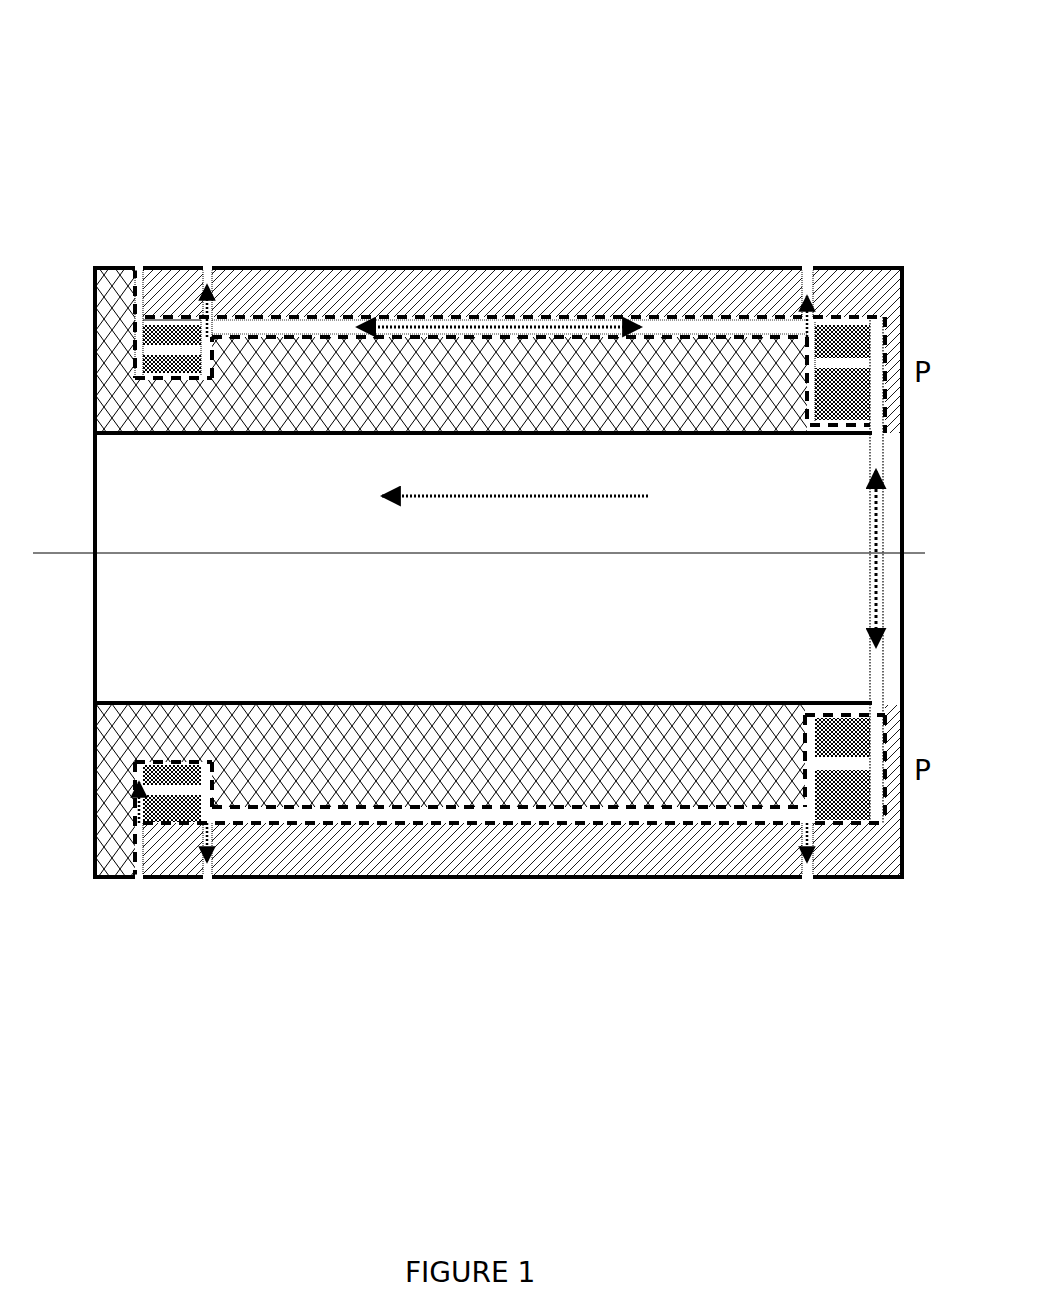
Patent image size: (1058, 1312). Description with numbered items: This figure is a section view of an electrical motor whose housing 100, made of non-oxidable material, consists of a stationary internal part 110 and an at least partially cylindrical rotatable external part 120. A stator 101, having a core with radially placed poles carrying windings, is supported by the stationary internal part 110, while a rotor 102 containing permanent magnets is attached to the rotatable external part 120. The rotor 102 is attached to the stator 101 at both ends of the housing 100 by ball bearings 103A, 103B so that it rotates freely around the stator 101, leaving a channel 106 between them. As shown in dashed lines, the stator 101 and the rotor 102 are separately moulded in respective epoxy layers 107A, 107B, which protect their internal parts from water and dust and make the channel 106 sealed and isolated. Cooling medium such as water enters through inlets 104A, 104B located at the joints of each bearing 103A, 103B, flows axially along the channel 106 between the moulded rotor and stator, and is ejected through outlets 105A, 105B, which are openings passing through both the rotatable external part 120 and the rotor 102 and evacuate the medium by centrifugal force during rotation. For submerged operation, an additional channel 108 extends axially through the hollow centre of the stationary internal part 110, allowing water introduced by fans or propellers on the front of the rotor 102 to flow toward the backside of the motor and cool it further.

The housing 100 is at (178, 35).
The stator 101 is at (590, 402).
The rotor 102 is at (415, 300).
The ball bearing 103A is at (158, 330).
The ball bearing 103B is at (850, 340).
The inlet 104A is at (139, 267).
The inlet 104B is at (876, 670).
The outlet 105A is at (208, 267).
The outlet 105B is at (807, 270).
The channel 106 is at (695, 328).
The epoxy layer 107A is at (493, 810).
The epoxy layer 107B is at (428, 823).
The additional channel 108 is at (160, 625).
The stationary internal part 110 is at (155, 435).
The rotatable external part 120 is at (325, 268).